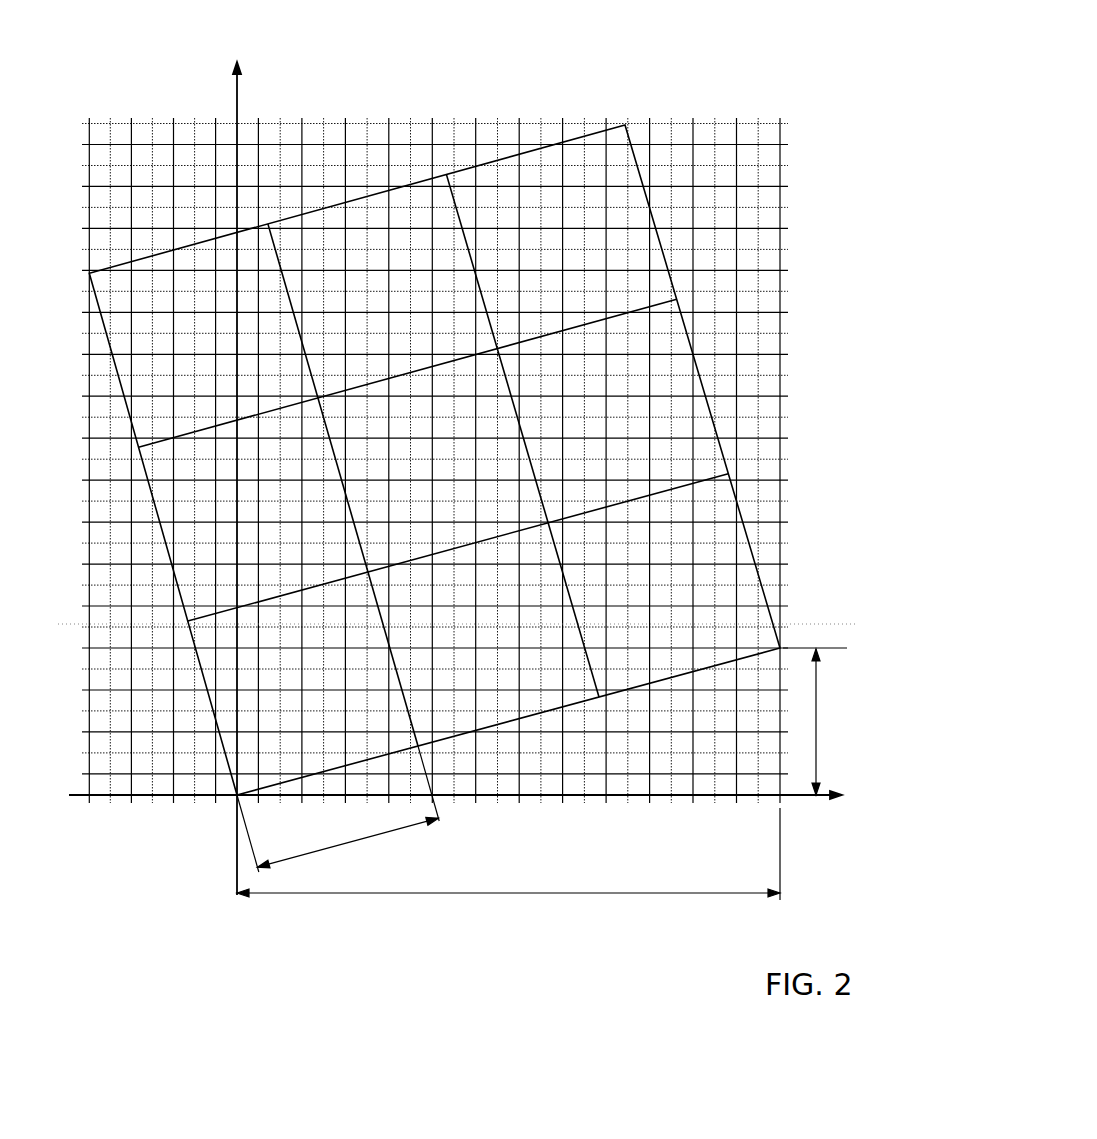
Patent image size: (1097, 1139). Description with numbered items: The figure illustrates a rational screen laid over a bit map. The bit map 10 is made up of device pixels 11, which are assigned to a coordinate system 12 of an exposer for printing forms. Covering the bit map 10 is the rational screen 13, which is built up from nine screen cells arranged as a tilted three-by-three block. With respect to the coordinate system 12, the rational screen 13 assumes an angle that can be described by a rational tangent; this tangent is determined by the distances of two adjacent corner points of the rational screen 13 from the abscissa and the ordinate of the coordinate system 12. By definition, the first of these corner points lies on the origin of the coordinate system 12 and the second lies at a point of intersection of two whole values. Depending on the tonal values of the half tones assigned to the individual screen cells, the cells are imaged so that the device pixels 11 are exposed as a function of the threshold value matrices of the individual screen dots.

The bit map 10 is at (712, 80).
The device pixels 11 is at (768, 200).
The coordinate system 12 is at (160, 843).
The rational screen 13 is at (683, 320).